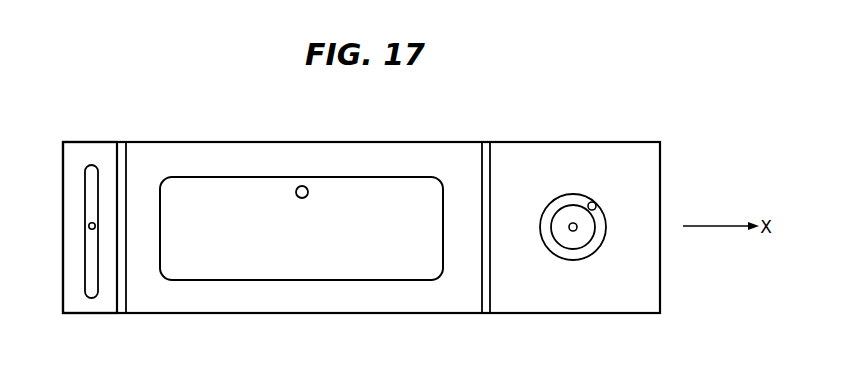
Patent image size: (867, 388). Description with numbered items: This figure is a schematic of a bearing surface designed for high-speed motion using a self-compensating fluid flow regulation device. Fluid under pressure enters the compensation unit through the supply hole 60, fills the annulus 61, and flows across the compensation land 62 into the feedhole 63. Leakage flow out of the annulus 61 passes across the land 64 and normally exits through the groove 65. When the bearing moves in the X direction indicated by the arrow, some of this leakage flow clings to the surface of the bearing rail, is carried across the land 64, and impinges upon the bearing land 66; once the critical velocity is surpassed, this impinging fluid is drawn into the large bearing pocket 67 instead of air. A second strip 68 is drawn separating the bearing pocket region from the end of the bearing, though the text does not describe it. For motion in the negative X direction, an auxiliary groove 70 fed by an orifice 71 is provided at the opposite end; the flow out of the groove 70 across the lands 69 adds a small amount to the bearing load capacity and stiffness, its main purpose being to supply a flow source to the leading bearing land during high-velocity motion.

The supply hole 60 is at (592, 202).
The annulus 61 is at (575, 195).
The compensation land 62 is at (570, 207).
The feedhole 63 is at (571, 226).
The land 64 is at (517, 215).
The groove 65 is at (484, 178).
The bearing land 66 is at (454, 197).
The bearing pocket 67 is at (278, 212).
The partition strip 68 is at (122, 143).
The lands 69 is at (95, 150).
The auxiliary groove 70 is at (90, 196).
The orifice 71 is at (89, 226).